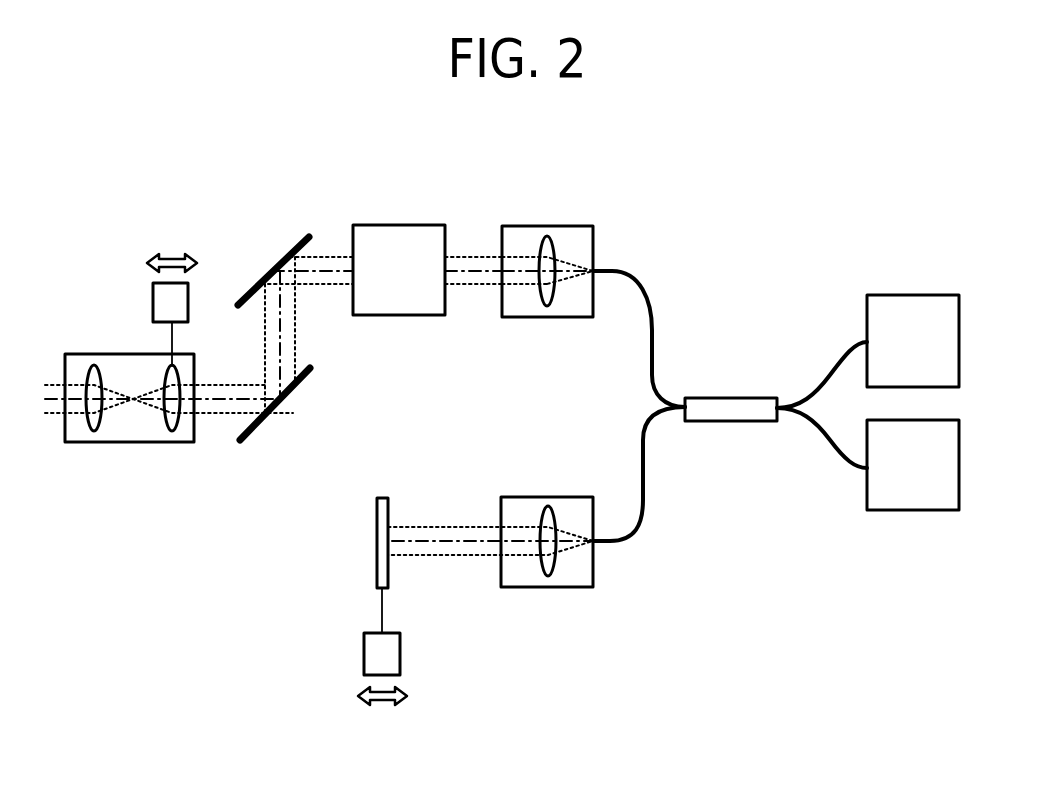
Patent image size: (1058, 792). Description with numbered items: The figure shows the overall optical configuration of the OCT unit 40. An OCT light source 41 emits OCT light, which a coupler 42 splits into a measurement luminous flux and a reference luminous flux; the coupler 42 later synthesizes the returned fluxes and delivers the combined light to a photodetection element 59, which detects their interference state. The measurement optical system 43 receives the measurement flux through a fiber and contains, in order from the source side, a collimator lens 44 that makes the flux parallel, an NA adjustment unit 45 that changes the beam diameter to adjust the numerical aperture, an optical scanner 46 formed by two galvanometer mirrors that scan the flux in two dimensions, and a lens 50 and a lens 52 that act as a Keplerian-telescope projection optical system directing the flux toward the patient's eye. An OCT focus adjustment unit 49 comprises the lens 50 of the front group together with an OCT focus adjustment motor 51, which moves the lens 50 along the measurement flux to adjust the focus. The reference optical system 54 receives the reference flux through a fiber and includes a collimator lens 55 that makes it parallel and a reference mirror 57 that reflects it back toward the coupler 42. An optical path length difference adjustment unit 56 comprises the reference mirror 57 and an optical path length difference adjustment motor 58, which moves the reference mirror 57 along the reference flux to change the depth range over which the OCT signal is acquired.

The OCT unit 40 is at (262, 82).
The OCT light source 41 is at (912, 510).
The coupler 42 is at (732, 398).
The measurement optical system 43 is at (638, 207).
The collimator lens 44 is at (548, 236).
The NA adjustment unit 45 is at (400, 225).
The optical scanner 46 is at (302, 327).
The OCT focus adjustment unit 49 is at (177, 250).
The lens 50 is at (170, 443).
The OCT focus adjustment motor 51 is at (153, 300).
The lens 52 is at (92, 443).
The reference optical system 54 is at (662, 545).
The collimator lens 55 is at (548, 507).
The optical path length difference adjustment unit 56 is at (388, 492).
The reference mirror 57 is at (377, 553).
The optical path length difference adjustment motor 58 is at (364, 654).
The photodetection element 59 is at (912, 295).